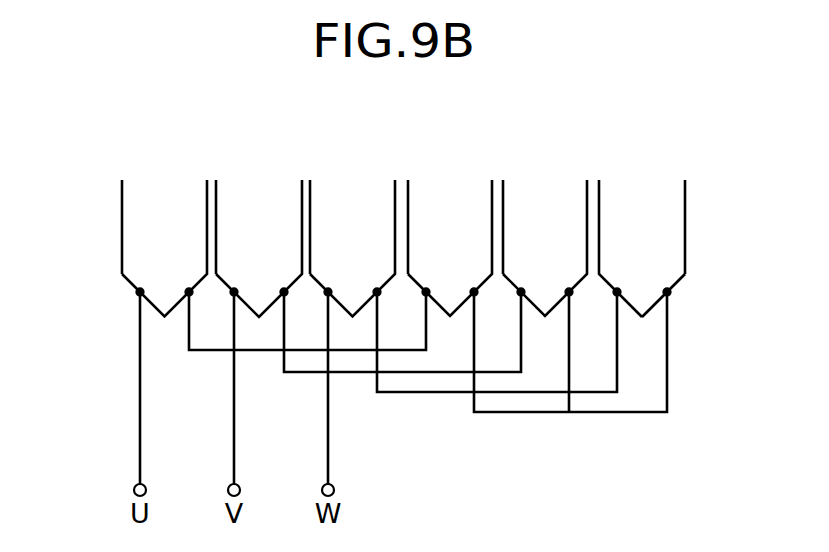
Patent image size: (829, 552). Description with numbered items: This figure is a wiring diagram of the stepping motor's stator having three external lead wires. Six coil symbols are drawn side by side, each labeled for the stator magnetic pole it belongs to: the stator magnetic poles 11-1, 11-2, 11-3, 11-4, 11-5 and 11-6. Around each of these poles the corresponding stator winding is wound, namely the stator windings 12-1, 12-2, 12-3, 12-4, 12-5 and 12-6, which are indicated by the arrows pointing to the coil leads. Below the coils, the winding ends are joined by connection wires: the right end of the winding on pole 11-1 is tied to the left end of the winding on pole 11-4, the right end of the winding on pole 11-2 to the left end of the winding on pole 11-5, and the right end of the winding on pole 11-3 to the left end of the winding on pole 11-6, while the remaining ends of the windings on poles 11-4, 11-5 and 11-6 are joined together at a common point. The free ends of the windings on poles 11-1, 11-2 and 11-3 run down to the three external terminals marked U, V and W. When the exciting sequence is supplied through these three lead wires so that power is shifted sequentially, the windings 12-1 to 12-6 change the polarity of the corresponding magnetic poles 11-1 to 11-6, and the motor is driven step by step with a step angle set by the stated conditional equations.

The stator magnetic pole 11-1 is at (120, 219).
The stator magnetic pole 11-2 is at (220, 219).
The stator magnetic pole 11-3 is at (326, 219).
The stator magnetic pole 11-4 is at (428, 219).
The stator magnetic pole 11-5 is at (527, 219).
The stator magnetic pole 11-6 is at (654, 219).
The stator winding 12-1 is at (121, 230).
The stator winding 12-2 is at (218, 199).
The stator winding 12-3 is at (312, 196).
The stator winding 12-4 is at (437, 145).
The stator winding 12-5 is at (548, 143).
The stator winding 12-6 is at (688, 191).